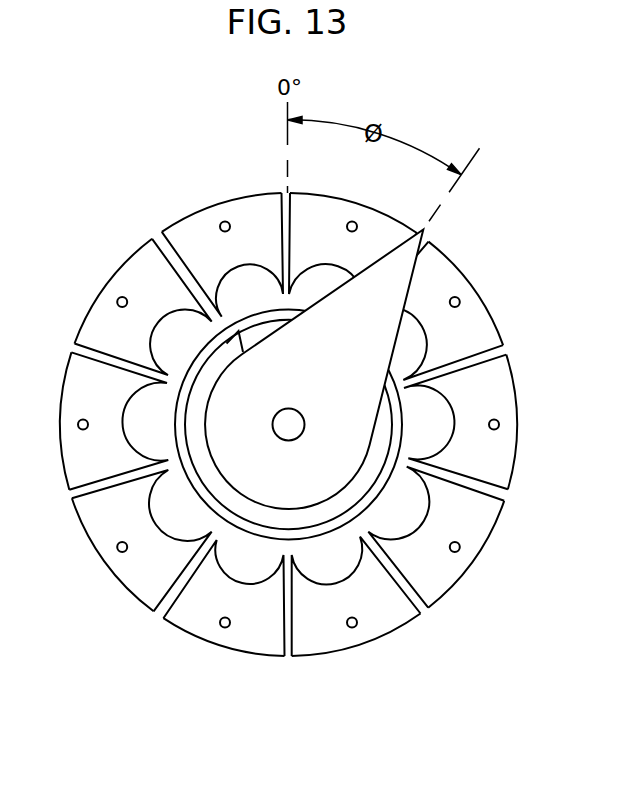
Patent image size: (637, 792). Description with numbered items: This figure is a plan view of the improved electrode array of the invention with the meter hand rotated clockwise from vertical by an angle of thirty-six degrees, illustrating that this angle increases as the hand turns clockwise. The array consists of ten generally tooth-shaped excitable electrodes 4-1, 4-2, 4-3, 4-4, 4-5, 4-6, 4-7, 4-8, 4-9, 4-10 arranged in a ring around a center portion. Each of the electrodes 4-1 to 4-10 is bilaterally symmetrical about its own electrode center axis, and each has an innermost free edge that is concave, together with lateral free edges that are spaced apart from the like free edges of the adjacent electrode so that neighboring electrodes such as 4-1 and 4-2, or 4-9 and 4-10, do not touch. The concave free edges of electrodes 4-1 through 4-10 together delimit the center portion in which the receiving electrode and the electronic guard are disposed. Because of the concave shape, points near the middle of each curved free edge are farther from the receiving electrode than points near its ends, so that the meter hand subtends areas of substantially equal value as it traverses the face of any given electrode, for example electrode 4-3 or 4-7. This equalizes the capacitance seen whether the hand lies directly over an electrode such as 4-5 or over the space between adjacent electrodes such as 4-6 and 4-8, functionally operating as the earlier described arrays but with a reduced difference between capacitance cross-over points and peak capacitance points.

The electrode 4-1 is at (353, 246).
The electrode 4-2 is at (441, 311).
The electrode 4-3 is at (483, 422).
The electrode 4-4 is at (444, 537).
The electrode 4-5 is at (356, 606).
The electrode 4-6 is at (223, 608).
The electrode 4-7 is at (132, 540).
The electrode 4-8 is at (88, 420).
The electrode 4-9 is at (131, 307).
The electrode 4-10 is at (222, 245).